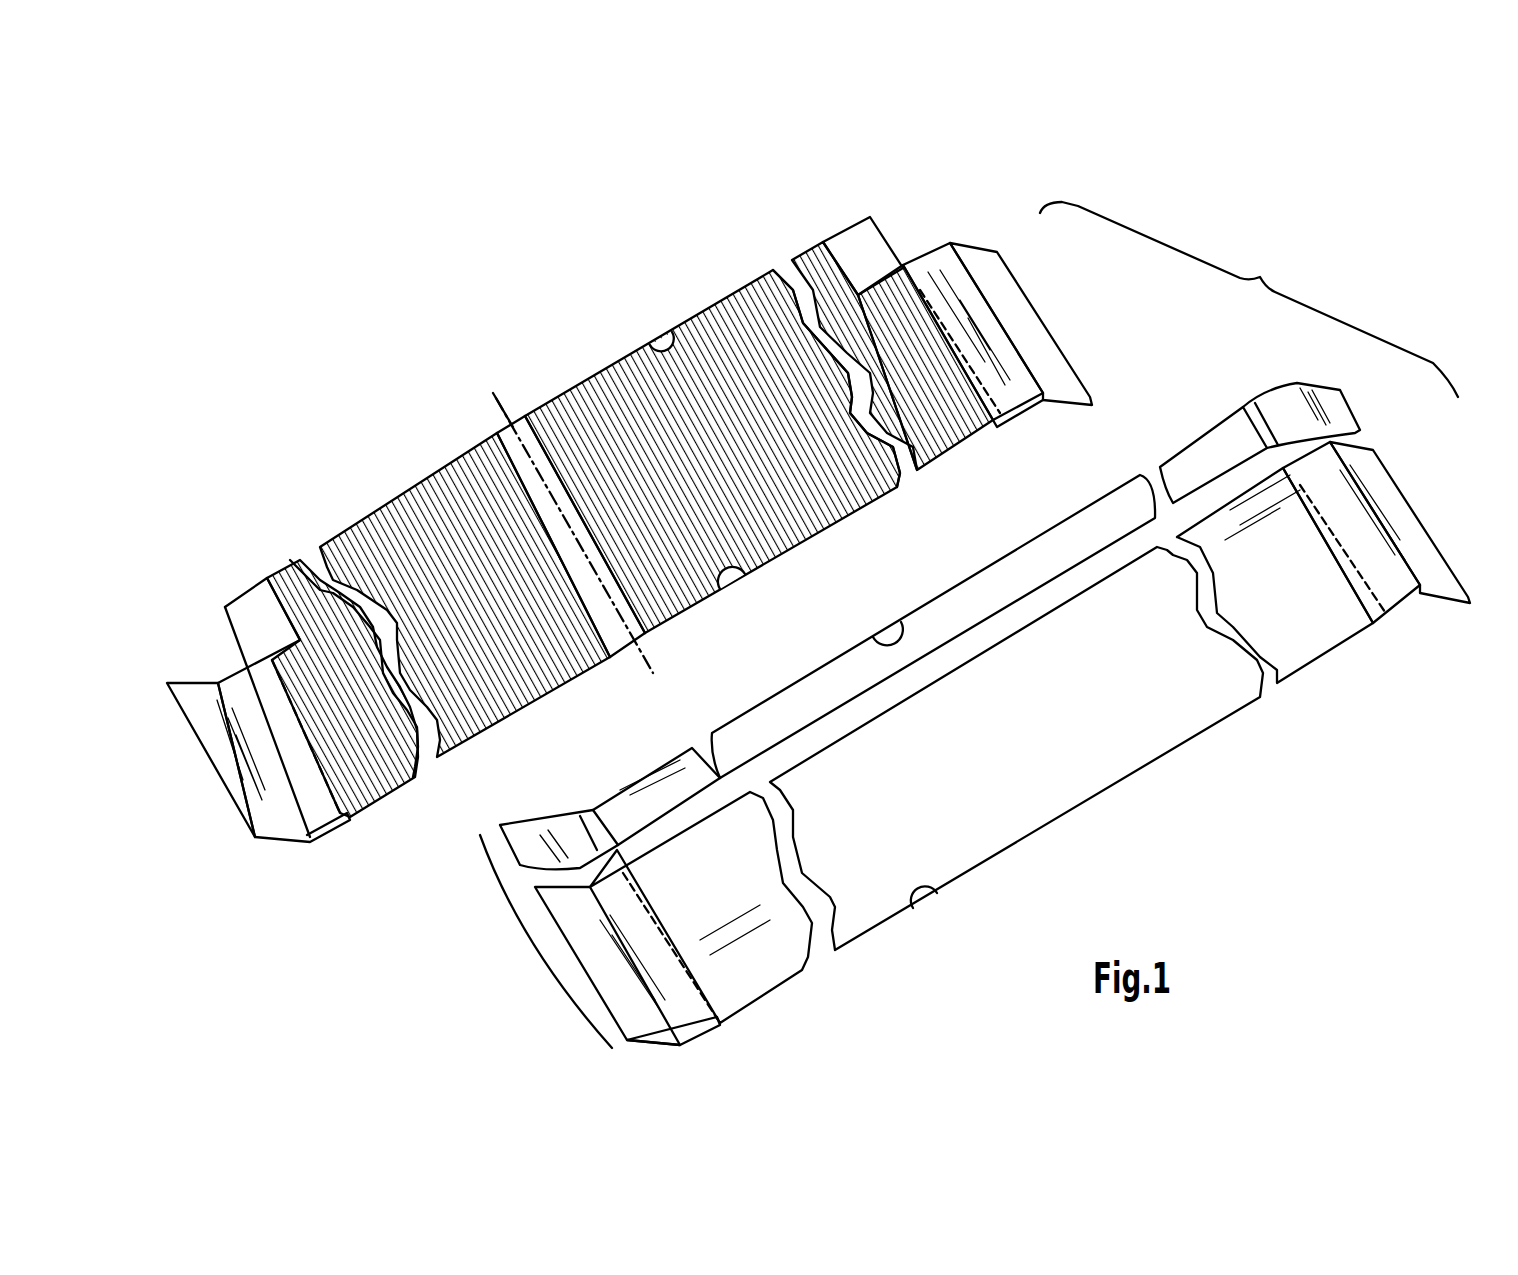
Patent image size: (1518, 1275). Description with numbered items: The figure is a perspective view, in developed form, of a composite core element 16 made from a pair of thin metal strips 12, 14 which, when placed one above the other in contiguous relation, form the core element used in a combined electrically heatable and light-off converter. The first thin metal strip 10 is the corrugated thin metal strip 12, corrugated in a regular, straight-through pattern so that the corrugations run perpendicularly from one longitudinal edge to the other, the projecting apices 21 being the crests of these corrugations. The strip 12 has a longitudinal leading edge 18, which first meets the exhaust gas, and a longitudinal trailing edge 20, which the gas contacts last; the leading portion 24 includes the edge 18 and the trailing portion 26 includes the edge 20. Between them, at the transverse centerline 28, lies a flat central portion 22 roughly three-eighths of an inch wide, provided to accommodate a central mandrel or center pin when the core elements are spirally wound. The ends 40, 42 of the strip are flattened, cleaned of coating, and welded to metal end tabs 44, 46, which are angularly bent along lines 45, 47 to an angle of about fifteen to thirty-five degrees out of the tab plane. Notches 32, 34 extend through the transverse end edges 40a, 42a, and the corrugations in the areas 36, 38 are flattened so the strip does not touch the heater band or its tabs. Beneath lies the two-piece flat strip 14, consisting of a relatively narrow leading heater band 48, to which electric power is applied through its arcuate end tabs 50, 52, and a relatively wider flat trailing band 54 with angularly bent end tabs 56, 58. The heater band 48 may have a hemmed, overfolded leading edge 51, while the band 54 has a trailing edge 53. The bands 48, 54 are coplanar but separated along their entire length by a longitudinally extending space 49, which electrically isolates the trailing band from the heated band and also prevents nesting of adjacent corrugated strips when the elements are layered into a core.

The first thin metal strip 10 is at (368, 495).
The corrugated thin metal strip 12 is at (598, 377).
The two-piece flat strip 14 is at (528, 950).
The composite core element 16 is at (1274, 270).
The longitudinal leading edge 18 is at (655, 340).
The longitudinal trailing edge 20 is at (728, 575).
The projecting apices 21 is at (863, 497).
The flat central portion 22 is at (631, 632).
The leading portion 24 is at (447, 508).
The trailing portion 26 is at (508, 722).
The transverse centerline 28 is at (503, 410).
The notch 32 is at (915, 220).
The notch 34 is at (197, 642).
The flattened portion 36 is at (853, 237).
The flattened portion 38 is at (253, 573).
The end 40 is at (918, 288).
The transverse end edge 40a is at (965, 322).
The end 42 is at (341, 826).
The transverse end edge 42a is at (378, 800).
The metal end tab 44 is at (1047, 353).
The bend line 45 is at (985, 322).
The metal end tab 46 is at (278, 843).
The bend line 47 is at (243, 740).
The heater band 48 is at (968, 600).
The space 49 is at (1073, 588).
The arcuate end tab 50 is at (1287, 400).
The leading edge 51 is at (873, 637).
The arcuate end tab 52 is at (563, 830).
The trailing edge 53 is at (908, 893).
The trailing band 54 is at (1047, 807).
The end tab 56 is at (1403, 517).
The end tab 58 is at (700, 1033).